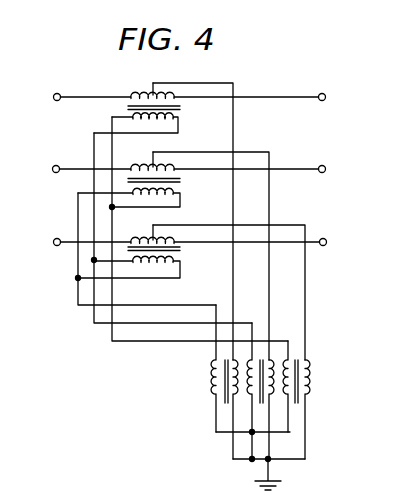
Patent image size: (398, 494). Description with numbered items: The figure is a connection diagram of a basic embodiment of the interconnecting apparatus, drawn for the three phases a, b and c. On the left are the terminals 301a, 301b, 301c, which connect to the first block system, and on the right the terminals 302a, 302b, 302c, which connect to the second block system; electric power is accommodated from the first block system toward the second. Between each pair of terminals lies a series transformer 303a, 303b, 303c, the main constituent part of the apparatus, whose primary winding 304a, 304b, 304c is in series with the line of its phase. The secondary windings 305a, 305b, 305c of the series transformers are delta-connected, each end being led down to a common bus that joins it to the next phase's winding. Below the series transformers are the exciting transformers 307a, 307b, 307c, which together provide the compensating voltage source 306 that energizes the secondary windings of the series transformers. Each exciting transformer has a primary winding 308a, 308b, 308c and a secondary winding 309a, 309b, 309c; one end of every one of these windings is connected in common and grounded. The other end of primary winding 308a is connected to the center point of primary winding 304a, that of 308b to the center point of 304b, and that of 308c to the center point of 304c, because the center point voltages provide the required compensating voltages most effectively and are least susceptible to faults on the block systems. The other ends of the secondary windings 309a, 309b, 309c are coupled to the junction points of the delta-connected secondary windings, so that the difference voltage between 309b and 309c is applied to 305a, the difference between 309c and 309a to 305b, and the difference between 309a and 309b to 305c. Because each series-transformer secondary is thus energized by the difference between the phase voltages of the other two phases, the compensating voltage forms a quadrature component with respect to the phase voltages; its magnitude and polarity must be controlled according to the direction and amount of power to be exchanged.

The terminal 301a is at (54, 94).
The terminal 301b is at (52, 168).
The terminal 301c is at (53, 241).
The terminal 302a is at (336, 86).
The terminal 302b is at (337, 158).
The terminal 302c is at (343, 232).
The series transformer 303a is at (183, 106).
The series transformer 303b is at (182, 177).
The series transformer 303c is at (182, 248).
The primary winding 304a is at (153, 95).
The primary winding 304b is at (135, 166).
The primary winding 304c is at (170, 240).
The secondary winding 305a is at (176, 120).
The secondary winding 305b is at (78, 192).
The secondary winding 305c is at (147, 264).
The compensating voltage source 306 is at (375, 389).
The exciting transformer 307a is at (224, 408).
The exciting transformer 307b is at (258, 407).
The exciting transformer 307c is at (292, 410).
The primary winding 308a is at (239, 403).
The primary winding 308b is at (276, 366).
The primary winding 308c is at (307, 396).
The secondary winding 309a is at (216, 393).
The secondary winding 309b is at (252, 370).
The secondary winding 309c is at (286, 366).